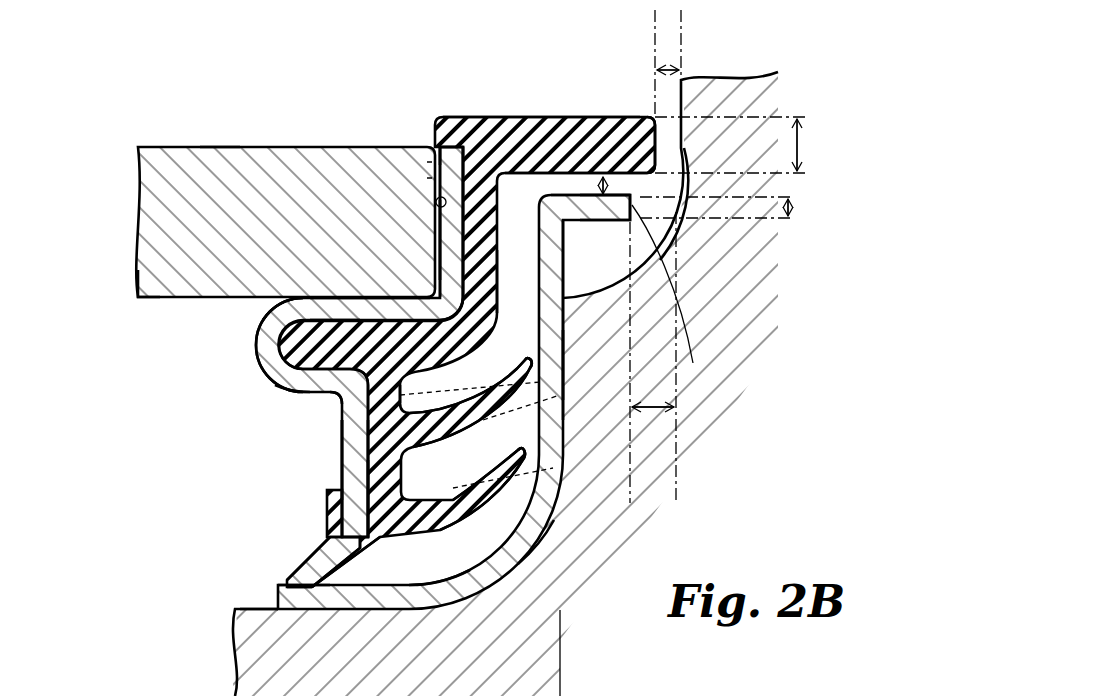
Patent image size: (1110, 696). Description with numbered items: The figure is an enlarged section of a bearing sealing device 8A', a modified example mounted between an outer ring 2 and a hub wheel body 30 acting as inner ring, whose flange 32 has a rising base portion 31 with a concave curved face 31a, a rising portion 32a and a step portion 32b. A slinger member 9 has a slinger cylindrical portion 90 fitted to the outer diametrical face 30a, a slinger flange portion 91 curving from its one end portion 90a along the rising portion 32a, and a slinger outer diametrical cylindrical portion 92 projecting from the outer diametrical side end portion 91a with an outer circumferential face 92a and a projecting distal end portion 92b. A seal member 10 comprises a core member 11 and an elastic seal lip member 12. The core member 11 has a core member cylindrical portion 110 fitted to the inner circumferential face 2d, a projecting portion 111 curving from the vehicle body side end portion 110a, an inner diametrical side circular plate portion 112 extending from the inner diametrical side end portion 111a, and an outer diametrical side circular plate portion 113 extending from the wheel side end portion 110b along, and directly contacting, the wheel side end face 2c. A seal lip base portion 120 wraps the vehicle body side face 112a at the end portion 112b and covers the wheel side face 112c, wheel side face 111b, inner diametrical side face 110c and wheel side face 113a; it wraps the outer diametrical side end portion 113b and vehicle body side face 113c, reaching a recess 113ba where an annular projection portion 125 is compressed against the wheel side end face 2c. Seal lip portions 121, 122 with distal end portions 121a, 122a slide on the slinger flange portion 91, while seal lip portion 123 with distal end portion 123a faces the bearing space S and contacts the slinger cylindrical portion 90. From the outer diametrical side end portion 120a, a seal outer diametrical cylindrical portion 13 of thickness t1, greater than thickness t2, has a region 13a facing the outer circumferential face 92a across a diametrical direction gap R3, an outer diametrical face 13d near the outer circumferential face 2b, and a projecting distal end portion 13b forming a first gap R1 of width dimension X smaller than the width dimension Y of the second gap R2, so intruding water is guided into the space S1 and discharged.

The outer ring 2 is at (145, 212).
The outer circumferential face 2b is at (207, 147).
The wheel side end face 2c is at (436, 200).
The inner circumferential face 2d is at (153, 300).
The bearing sealing device 8A' is at (97, 415).
The slinger member 9 is at (452, 585).
The slinger cylindrical portion 90 is at (308, 600).
The one end portion 90a is at (377, 593).
The slinger flange portion 91 is at (550, 363).
The outer diametrical side end portion 91a is at (550, 212).
The slinger outer diametrical cylindrical portion 92 is at (607, 215).
The outer circumferential face 92a is at (565, 195).
The projecting distal end portion 92b is at (640, 205).
The seal member 10 is at (203, 442).
The core member 11 is at (330, 443).
The seal lip member 12 is at (273, 540).
The seal outer diametrical cylindrical portion 13 is at (530, 53).
The region 13a is at (541, 170).
The projecting distal end portion 13b is at (681, 145).
The outer diametrical face 13d is at (580, 117).
The hub wheel body 30 is at (243, 645).
The outer diametrical face 30a is at (250, 609).
The rising base portion 31 is at (553, 593).
The concave curved face 31a is at (527, 560).
The flange 32 is at (740, 243).
The rising portion 32a is at (565, 380).
The step portion 32b is at (740, 228).
The core member cylindrical portion 110 is at (333, 310).
The vehicle body side end portion 110a is at (283, 312).
The wheel side end portion 110b is at (447, 307).
The inner diametrical side face 110c is at (327, 323).
The projecting portion 111 is at (258, 350).
The inner diametrical side end portion 111a is at (337, 400).
The wheel side face 111b is at (293, 373).
The inner diametrical side circular plate portion 112 is at (347, 468).
The vehicle body side face 112a is at (335, 510).
The end portion 112b is at (348, 562).
The wheel side face 112c is at (373, 500).
The outer diametrical side circular plate portion 113 is at (443, 222).
The wheel side face 113a is at (500, 300).
The outer diametrical side end portion 113b is at (451, 147).
The recess 113ba is at (440, 157).
The vehicle body side face 113c is at (440, 240).
The seal lip base portion 120 is at (380, 390).
The outer diametrical side end portion 120a is at (483, 125).
The seal lip portion 121 is at (505, 388).
The distal end portion 121a is at (532, 362).
The seal lip portion 122 is at (492, 488).
The distal end portion 122a is at (527, 447).
The seal lip portion 123 is at (291, 580).
The distal end portion 123a is at (290, 580).
The annular projection portion 125 is at (425, 172).
The first gap R1 is at (661, 116).
The second gap R2 is at (657, 203).
The diametrical direction gap R3 is at (622, 170).
The bearing space S is at (99, 567).
The space S1 is at (714, 373).
The thickness t1 is at (741, 145).
The thickness t2 is at (731, 210).
The width dimension X is at (700, 62).
The width dimension Y is at (653, 412).